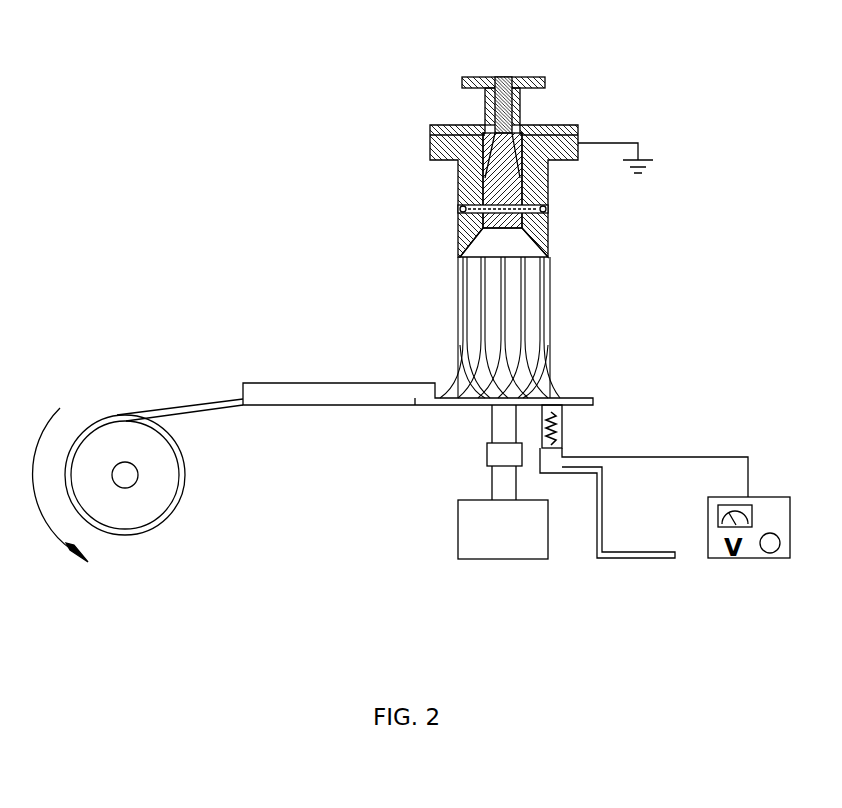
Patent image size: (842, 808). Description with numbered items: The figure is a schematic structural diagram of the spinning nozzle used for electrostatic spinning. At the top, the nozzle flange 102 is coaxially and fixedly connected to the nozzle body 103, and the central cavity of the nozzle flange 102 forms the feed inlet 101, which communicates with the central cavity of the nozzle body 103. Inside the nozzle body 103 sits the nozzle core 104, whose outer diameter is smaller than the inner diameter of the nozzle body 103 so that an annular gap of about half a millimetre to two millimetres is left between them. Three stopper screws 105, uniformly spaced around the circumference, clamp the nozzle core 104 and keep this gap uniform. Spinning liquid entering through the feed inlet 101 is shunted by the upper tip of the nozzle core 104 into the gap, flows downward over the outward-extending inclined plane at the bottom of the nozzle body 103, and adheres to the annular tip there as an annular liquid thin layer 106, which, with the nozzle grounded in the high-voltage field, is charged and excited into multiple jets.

The feed inlet 101 is at (503, 77).
The nozzle flange 102 is at (516, 92).
The nozzle body 103 is at (540, 153).
The nozzle core 104 is at (508, 182).
The stopper screws 105 is at (529, 209).
The annular liquid thin layer 106 is at (523, 229).